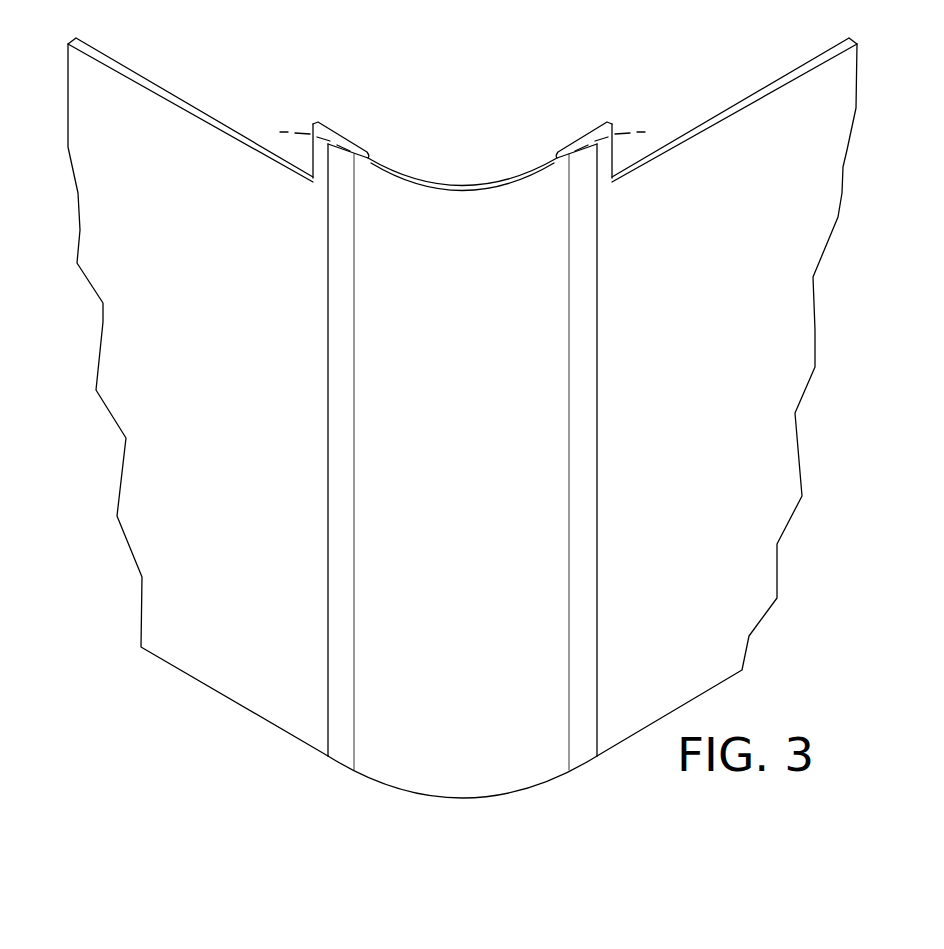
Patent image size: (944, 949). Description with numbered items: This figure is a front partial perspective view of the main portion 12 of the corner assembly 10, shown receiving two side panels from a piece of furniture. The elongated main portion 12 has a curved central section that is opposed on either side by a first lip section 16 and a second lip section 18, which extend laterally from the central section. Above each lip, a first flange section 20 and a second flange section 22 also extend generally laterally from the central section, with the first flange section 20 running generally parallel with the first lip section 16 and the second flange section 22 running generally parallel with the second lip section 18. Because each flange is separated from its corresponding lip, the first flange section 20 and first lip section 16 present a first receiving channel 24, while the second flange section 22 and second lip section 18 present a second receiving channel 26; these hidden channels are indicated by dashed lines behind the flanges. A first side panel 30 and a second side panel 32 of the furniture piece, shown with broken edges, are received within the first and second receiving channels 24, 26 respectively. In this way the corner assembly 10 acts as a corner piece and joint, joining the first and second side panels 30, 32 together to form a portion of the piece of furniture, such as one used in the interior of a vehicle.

The corner assembly 10 is at (462, 405).
The elongated main portion 12 is at (488, 217).
The first lip section 16 is at (340, 170).
The second lip section 18 is at (585, 170).
The first flange section 20 is at (338, 133).
The second flange section 22 is at (590, 137).
The first receiving channel 24 is at (278, 131).
The second receiving channel 26 is at (647, 131).
The first side panel 30 is at (183, 133).
The second side panel 32 is at (742, 133).